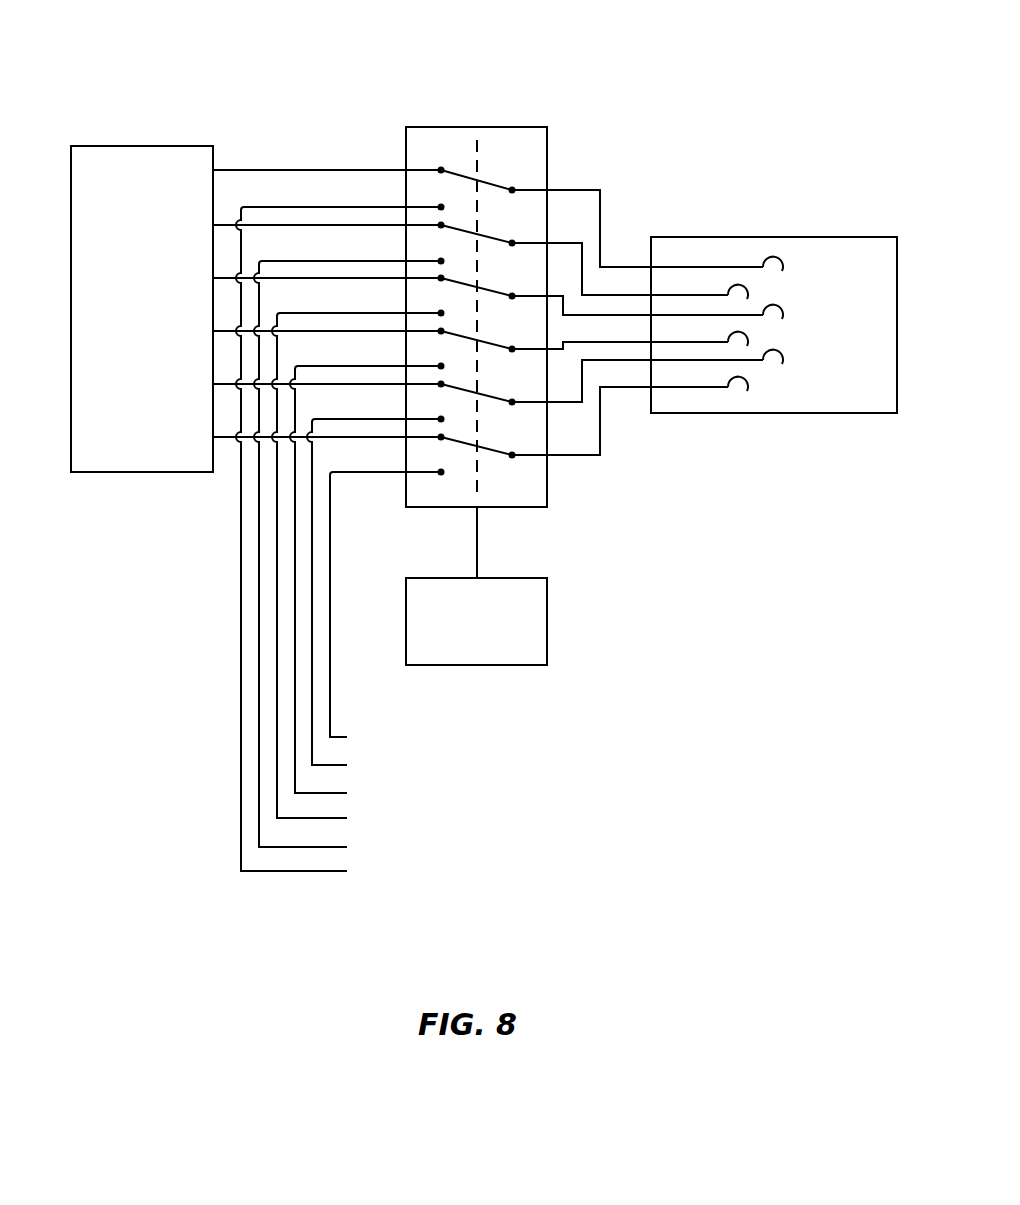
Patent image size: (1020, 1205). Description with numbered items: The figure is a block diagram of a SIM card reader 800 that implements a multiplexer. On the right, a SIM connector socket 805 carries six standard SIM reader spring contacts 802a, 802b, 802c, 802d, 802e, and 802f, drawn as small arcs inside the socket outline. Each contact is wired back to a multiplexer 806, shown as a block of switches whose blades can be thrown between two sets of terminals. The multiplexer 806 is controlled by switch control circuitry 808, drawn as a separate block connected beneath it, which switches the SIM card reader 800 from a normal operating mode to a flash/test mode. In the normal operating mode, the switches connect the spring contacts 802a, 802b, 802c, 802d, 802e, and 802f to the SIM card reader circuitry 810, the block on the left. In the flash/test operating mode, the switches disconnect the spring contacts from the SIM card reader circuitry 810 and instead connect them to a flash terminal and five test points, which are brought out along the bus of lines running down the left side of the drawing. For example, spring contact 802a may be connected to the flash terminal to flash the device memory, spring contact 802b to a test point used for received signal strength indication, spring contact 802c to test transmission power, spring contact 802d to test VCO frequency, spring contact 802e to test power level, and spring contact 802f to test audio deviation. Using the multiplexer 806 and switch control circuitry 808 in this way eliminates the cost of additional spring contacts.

The SIM card reader 800 is at (704, 72).
The SIM card reader circuitry 810 is at (148, 146).
The multiplexer 806 is at (490, 127).
The switch control circuitry 808 is at (505, 665).
The SIM connector socket 805 is at (860, 413).
The SIM reader spring contact 802a is at (773, 257).
The SIM reader spring contact 802b is at (738, 285).
The SIM reader spring contact 802c is at (773, 305).
The SIM reader spring contact 802d is at (738, 332).
The SIM reader spring contact 802e is at (773, 350).
The SIM reader spring contact 802f is at (738, 377).